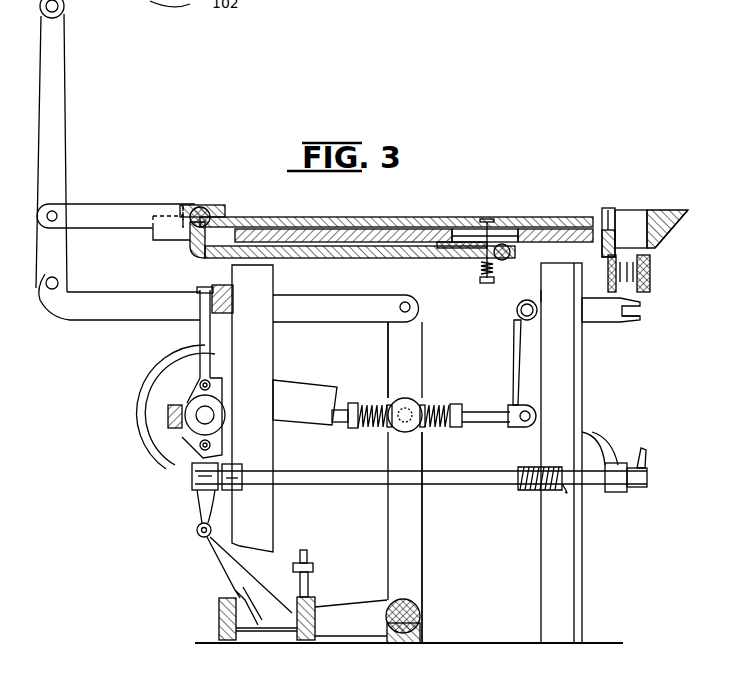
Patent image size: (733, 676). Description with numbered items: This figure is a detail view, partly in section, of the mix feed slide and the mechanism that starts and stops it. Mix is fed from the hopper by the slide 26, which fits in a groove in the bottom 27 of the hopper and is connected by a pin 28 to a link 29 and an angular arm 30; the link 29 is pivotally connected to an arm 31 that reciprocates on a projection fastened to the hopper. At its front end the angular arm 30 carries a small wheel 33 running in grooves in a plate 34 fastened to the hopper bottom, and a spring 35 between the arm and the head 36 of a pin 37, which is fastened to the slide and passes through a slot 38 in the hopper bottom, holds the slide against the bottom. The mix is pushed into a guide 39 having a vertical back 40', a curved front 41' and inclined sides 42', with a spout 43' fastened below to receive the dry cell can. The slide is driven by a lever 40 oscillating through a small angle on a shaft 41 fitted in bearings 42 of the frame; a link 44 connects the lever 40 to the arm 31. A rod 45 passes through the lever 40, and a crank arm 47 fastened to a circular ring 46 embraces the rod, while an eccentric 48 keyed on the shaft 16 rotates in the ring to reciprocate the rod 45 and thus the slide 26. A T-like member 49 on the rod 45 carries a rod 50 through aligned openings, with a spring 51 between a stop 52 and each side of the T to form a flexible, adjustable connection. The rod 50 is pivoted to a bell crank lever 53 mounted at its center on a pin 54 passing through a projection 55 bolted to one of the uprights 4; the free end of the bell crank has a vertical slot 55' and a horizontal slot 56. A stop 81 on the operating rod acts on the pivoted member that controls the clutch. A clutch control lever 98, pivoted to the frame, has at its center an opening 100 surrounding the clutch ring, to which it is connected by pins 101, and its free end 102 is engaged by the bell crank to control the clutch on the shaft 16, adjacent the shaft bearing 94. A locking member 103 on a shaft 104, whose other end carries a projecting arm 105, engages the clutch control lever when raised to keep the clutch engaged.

The uprights 4 is at (273, 343).
The shaft 16 is at (203, 420).
The slide 26 is at (381, 217).
The bottom of the hopper 27 is at (387, 259).
The pin 28 is at (201, 207).
The link 29 is at (125, 224).
The angular arm 30 is at (205, 259).
The arm 31 is at (63, 148).
The small wheel 33 is at (510, 256).
The plate 34 is at (444, 249).
The spring 35 is at (482, 270).
The head 36 is at (487, 284).
The pin 37 is at (490, 222).
The slot 38 is at (467, 232).
The guide 39 is at (634, 216).
The lever 40 is at (421, 482).
The vertical back 40' is at (610, 216).
The shaft 41 is at (428, 612).
The curved front 41' is at (679, 231).
The bearings 42 is at (432, 628).
The sides 42' is at (631, 229).
The spout 43' is at (650, 273).
The link 44 is at (115, 321).
The rod 45 is at (423, 405).
The circular ring 46 is at (143, 408).
The crank arm 47 is at (317, 395).
The eccentric 48 is at (160, 378).
The member 49 is at (403, 428).
The rod 50 is at (490, 424).
The spring 51 is at (367, 405).
The stop 52 is at (352, 430).
The bell crank lever 53 is at (522, 355).
The pin 54 is at (518, 307).
The projection 55 is at (526, 288).
The vertical slot 55' is at (629, 341).
The horizontal slot 56 is at (640, 312).
The stop 81 is at (313, 566).
The shaft bearing 94 is at (228, 427).
The clutch control lever 98 is at (205, 347).
The opening 100 is at (186, 403).
The pins 101 is at (170, 415).
The free end 102 is at (197, 528).
The locking member 103 is at (197, 492).
The shaft 104 is at (355, 486).
The projecting arm 105 is at (647, 456).